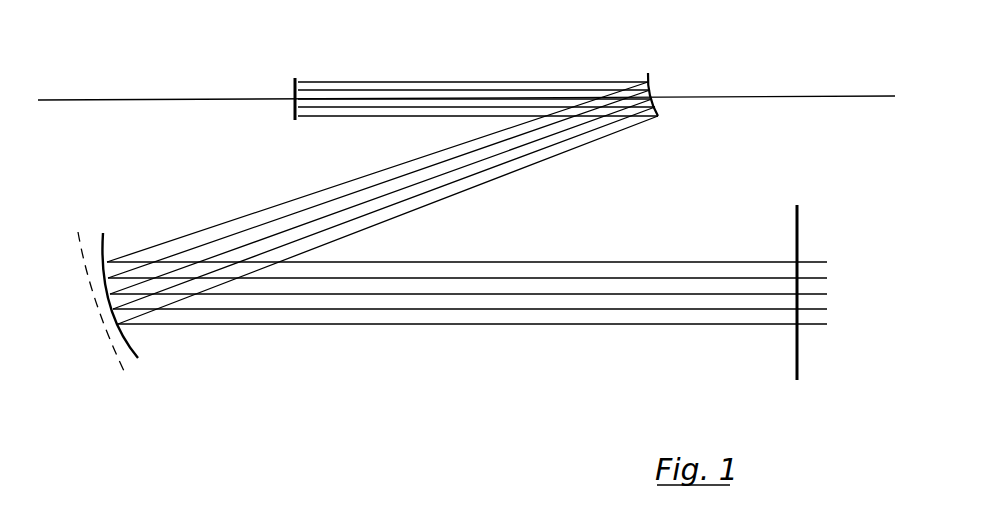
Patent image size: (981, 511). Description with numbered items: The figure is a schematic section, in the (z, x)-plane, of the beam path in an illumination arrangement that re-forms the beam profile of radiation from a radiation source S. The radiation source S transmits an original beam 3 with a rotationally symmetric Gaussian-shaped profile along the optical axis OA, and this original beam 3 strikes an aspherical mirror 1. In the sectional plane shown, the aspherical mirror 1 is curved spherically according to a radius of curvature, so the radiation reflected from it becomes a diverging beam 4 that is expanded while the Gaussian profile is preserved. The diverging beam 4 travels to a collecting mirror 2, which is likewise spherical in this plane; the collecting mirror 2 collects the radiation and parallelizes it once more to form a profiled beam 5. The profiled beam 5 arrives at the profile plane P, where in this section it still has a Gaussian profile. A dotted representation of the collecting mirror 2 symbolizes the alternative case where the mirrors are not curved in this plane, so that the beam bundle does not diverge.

The radiation source S is at (292, 80).
The original beam 3 is at (515, 80).
The aspherical mirror 1 is at (650, 86).
The diverging beam 4 is at (530, 162).
The collecting mirror 2 is at (130, 355).
The profiled beam 5 is at (620, 324).
The profile plane P is at (797, 355).
The optical axis OA is at (798, 97).